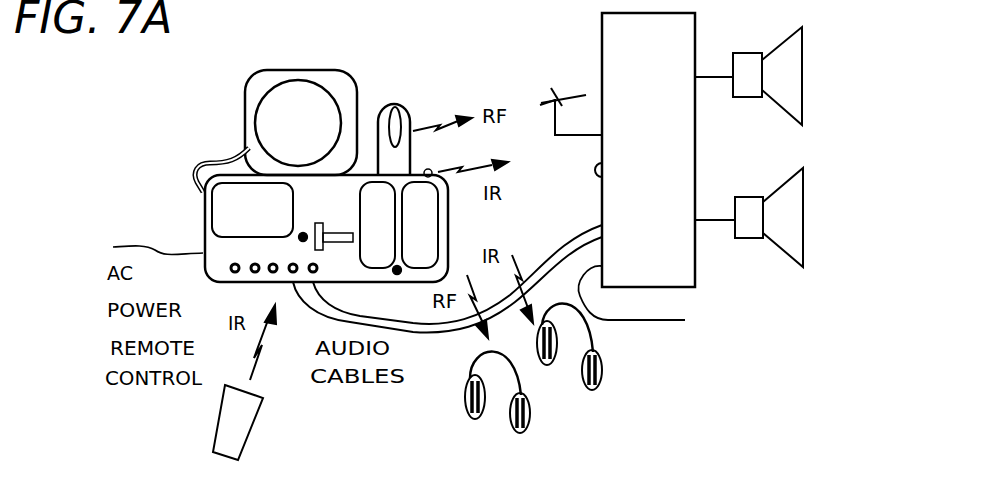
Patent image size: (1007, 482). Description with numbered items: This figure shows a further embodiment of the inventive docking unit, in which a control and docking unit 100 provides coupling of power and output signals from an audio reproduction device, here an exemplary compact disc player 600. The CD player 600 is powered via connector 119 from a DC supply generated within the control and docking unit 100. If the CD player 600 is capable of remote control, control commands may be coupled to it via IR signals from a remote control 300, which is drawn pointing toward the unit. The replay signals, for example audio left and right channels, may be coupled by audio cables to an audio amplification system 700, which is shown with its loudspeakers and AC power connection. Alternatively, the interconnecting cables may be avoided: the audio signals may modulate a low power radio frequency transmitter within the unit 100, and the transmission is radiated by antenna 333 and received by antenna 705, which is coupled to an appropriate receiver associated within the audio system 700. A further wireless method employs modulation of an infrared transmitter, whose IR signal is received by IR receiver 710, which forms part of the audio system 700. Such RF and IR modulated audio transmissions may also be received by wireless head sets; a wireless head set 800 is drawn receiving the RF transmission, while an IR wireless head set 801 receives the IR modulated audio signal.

The compact disc player 600 is at (242, 95).
The connector 119 is at (213, 157).
The control and docking unit 100 is at (203, 213).
The antenna 333 is at (394, 129).
The remote control 300 is at (208, 418).
The audio amplification system 700 is at (602, 34).
The antenna 705 is at (571, 100).
The IR receiver 710 is at (575, 181).
The headphones 800 is at (497, 400).
The IR wireless head set 801 is at (569, 352).